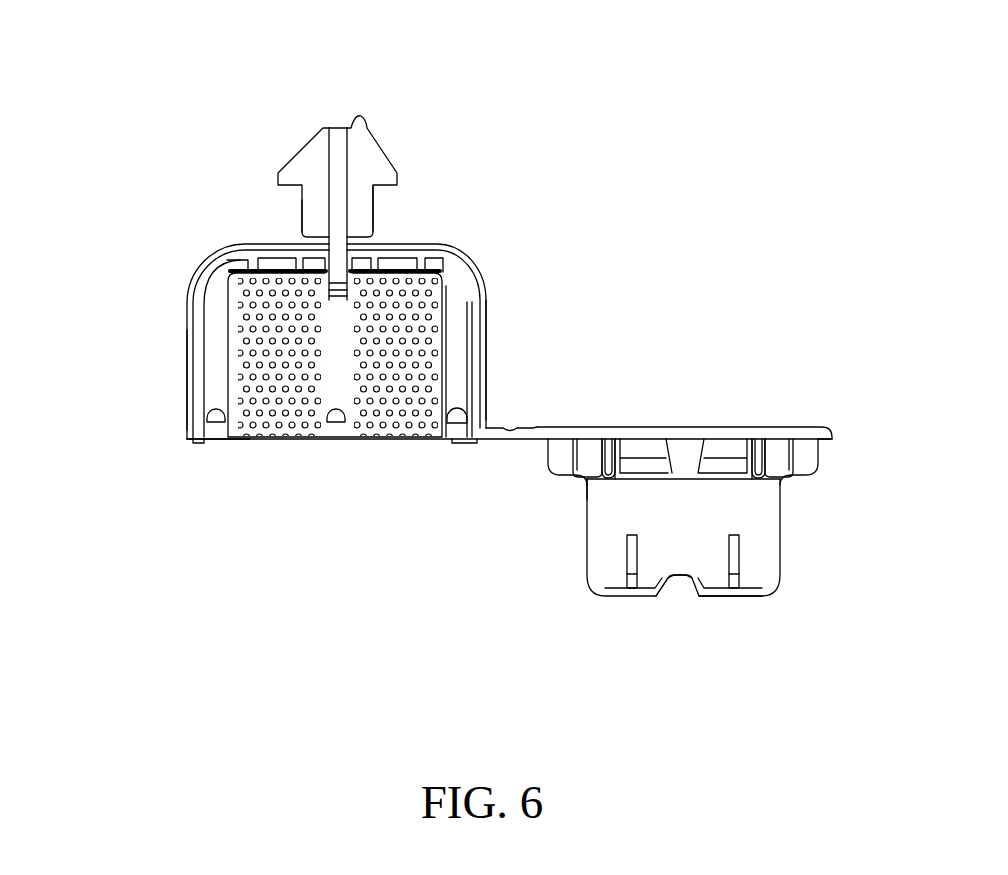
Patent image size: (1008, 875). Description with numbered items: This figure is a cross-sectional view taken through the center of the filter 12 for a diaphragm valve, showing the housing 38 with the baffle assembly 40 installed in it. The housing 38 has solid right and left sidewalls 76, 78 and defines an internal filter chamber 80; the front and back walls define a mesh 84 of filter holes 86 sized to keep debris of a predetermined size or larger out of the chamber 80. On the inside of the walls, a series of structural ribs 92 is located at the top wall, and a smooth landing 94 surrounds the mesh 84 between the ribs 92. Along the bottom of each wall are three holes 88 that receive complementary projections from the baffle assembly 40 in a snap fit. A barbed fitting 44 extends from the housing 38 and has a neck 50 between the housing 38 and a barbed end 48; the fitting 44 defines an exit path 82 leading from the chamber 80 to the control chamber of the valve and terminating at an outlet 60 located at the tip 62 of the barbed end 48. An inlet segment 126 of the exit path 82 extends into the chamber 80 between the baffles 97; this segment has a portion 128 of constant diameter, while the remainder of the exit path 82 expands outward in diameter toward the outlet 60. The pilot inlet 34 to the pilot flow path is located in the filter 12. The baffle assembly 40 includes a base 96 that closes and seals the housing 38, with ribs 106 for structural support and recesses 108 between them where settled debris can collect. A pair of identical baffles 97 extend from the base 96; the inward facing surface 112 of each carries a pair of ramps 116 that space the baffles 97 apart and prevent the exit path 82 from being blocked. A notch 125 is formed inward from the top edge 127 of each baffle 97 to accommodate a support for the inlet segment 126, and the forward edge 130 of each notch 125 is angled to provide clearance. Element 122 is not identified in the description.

The filter 12 is at (516, 102).
The pilot inlet 34 is at (345, 282).
The housing 38 is at (488, 369).
The baffle assembly 40 is at (728, 420).
The barbed fitting 44 is at (297, 149).
The barbed end 48 is at (386, 158).
The neck 50 is at (376, 214).
The outlet 60 is at (352, 92).
The tip 62 is at (320, 130).
The right sidewall 76 is at (489, 312).
The left sidewall 78 is at (188, 420).
The filter chamber 80 is at (227, 345).
The exit path 82 is at (341, 214).
The mesh 84 is at (296, 418).
The filter holes 86 is at (398, 423).
The holes 88 is at (216, 425).
The structural ribs 92 is at (252, 265).
The smooth landing 94 is at (217, 370).
The base 96 is at (810, 427).
The baffles 97 is at (768, 533).
The ribs 106 is at (608, 455).
The recesses 108 is at (585, 455).
The inward facing surface 112 is at (664, 556).
The ramps 116 is at (628, 575).
The rim 122 is at (630, 477).
The notch 125 is at (682, 592).
The inlet segment 126 is at (334, 285).
The top edge 127 is at (705, 598).
The portion with a constant diameter 128 is at (336, 289).
The forward edge 130 is at (664, 592).